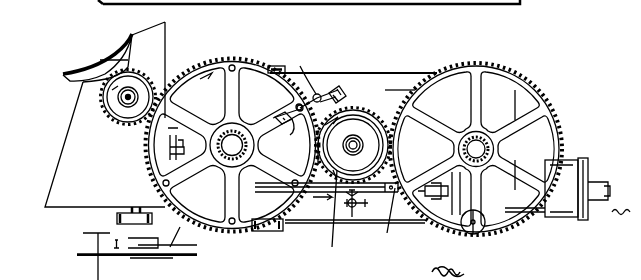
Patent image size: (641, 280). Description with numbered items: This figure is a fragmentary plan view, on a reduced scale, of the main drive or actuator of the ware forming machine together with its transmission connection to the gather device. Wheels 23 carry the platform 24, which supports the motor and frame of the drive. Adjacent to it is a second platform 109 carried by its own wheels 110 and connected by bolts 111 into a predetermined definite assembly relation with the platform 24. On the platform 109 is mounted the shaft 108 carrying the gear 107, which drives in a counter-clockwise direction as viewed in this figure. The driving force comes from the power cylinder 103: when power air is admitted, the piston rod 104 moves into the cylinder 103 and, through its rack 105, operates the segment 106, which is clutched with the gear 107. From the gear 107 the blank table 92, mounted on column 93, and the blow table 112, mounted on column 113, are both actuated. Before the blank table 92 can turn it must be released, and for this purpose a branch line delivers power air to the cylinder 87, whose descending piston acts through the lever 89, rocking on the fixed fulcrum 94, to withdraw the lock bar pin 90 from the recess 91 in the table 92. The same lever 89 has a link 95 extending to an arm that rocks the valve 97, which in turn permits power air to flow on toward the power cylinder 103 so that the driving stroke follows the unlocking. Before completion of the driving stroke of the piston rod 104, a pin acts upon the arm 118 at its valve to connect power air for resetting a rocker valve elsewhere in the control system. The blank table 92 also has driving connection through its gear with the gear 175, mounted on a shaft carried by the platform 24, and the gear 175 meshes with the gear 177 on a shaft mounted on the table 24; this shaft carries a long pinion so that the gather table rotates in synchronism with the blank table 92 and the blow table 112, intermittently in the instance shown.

The wheels 23 is at (115, 217).
The platform 24 is at (157, 48).
The cylinder 87 is at (316, 78).
The lever 89 is at (280, 66).
The lock bar pin 90 is at (294, 104).
The recess 91 is at (163, 183).
The table 92 is at (285, 232).
The column 93 is at (222, 183).
The fixed fulcrum 94 is at (284, 128).
The link 95 is at (332, 87).
The valve 97 is at (342, 95).
The power cylinder 103 is at (565, 165).
The piston rod 104 is at (387, 234).
The rack 105 is at (325, 221).
The segment 106 is at (340, 203).
The gear 107 is at (368, 113).
The shaft 108 is at (349, 156).
The platform 109 is at (390, 80).
The wheels 110 is at (273, 64).
The bolts 111 is at (163, 153).
The blow table 112 is at (518, 85).
The column 113 is at (473, 128).
The arm 118 is at (358, 220).
The gear 175 is at (125, 123).
The gear 177 is at (82, 83).